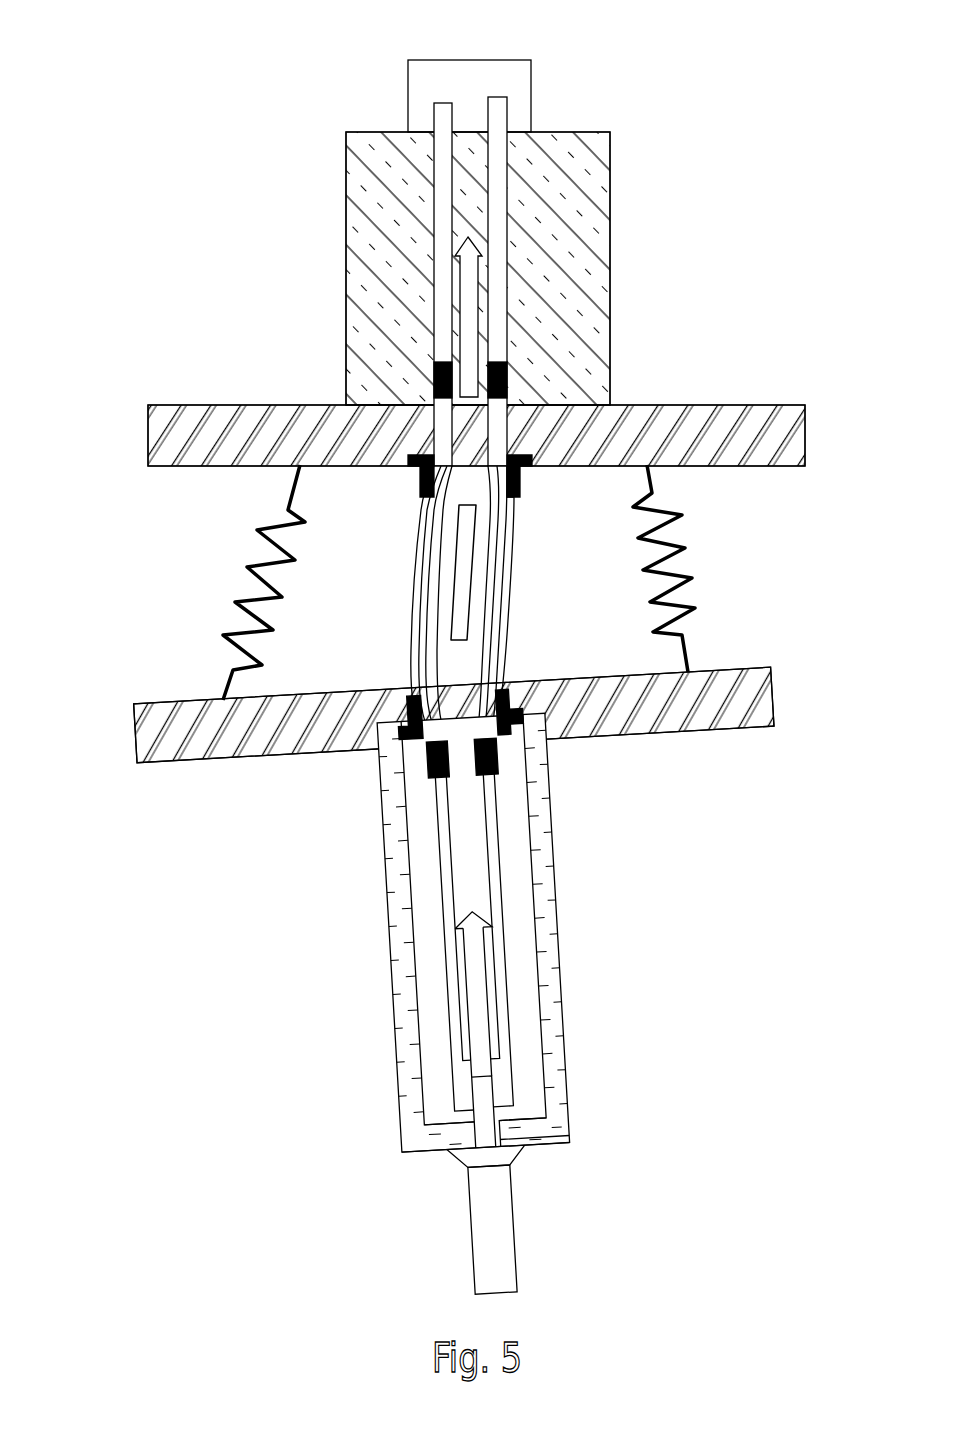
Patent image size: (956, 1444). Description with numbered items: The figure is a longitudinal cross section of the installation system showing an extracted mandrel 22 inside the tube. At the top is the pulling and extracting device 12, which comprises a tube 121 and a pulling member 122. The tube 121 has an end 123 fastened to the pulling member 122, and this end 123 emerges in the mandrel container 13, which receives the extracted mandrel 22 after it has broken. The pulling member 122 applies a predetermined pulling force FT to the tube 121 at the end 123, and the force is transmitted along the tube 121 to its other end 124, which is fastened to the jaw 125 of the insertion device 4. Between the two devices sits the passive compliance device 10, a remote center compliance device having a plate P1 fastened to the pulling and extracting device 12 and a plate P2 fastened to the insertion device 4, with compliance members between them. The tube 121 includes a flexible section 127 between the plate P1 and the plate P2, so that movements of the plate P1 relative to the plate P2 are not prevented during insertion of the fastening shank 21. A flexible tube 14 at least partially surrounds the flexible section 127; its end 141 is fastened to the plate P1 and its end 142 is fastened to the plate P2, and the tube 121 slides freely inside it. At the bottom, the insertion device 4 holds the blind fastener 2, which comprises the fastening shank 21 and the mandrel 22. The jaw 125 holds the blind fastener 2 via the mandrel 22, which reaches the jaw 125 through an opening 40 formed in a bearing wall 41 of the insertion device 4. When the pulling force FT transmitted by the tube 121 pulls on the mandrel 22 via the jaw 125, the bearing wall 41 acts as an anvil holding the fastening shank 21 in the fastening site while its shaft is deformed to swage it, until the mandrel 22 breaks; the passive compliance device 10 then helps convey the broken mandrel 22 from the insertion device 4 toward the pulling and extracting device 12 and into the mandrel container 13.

The passive compliance device 10 is at (440, 659).
The mandrel container 13 is at (531, 80).
The end of the tube 123 is at (442, 113).
The pulling member 122 is at (597, 318).
The pulling force FT is at (461, 276).
The plate P1 is at (745, 405).
The end of the flexible tube 141 is at (418, 483).
The flexible tube 14 is at (379, 604).
The flexible section 127 is at (410, 652).
The mandrel 22 is at (465, 562).
The tube 121 is at (487, 622).
The plate P2 is at (722, 734).
The end of the flexible tube 142 is at (403, 752).
The pulling and extracting device 12 is at (498, 880).
The insertion device 4 is at (470, 992).
The end of the tube 124 is at (458, 1072).
The jaw 125 is at (458, 1107).
The opening 40 is at (497, 1130).
The bearing wall 41 is at (545, 1147).
The blind fastener 2 is at (495, 1223).
The fastening shank 21 is at (482, 1236).